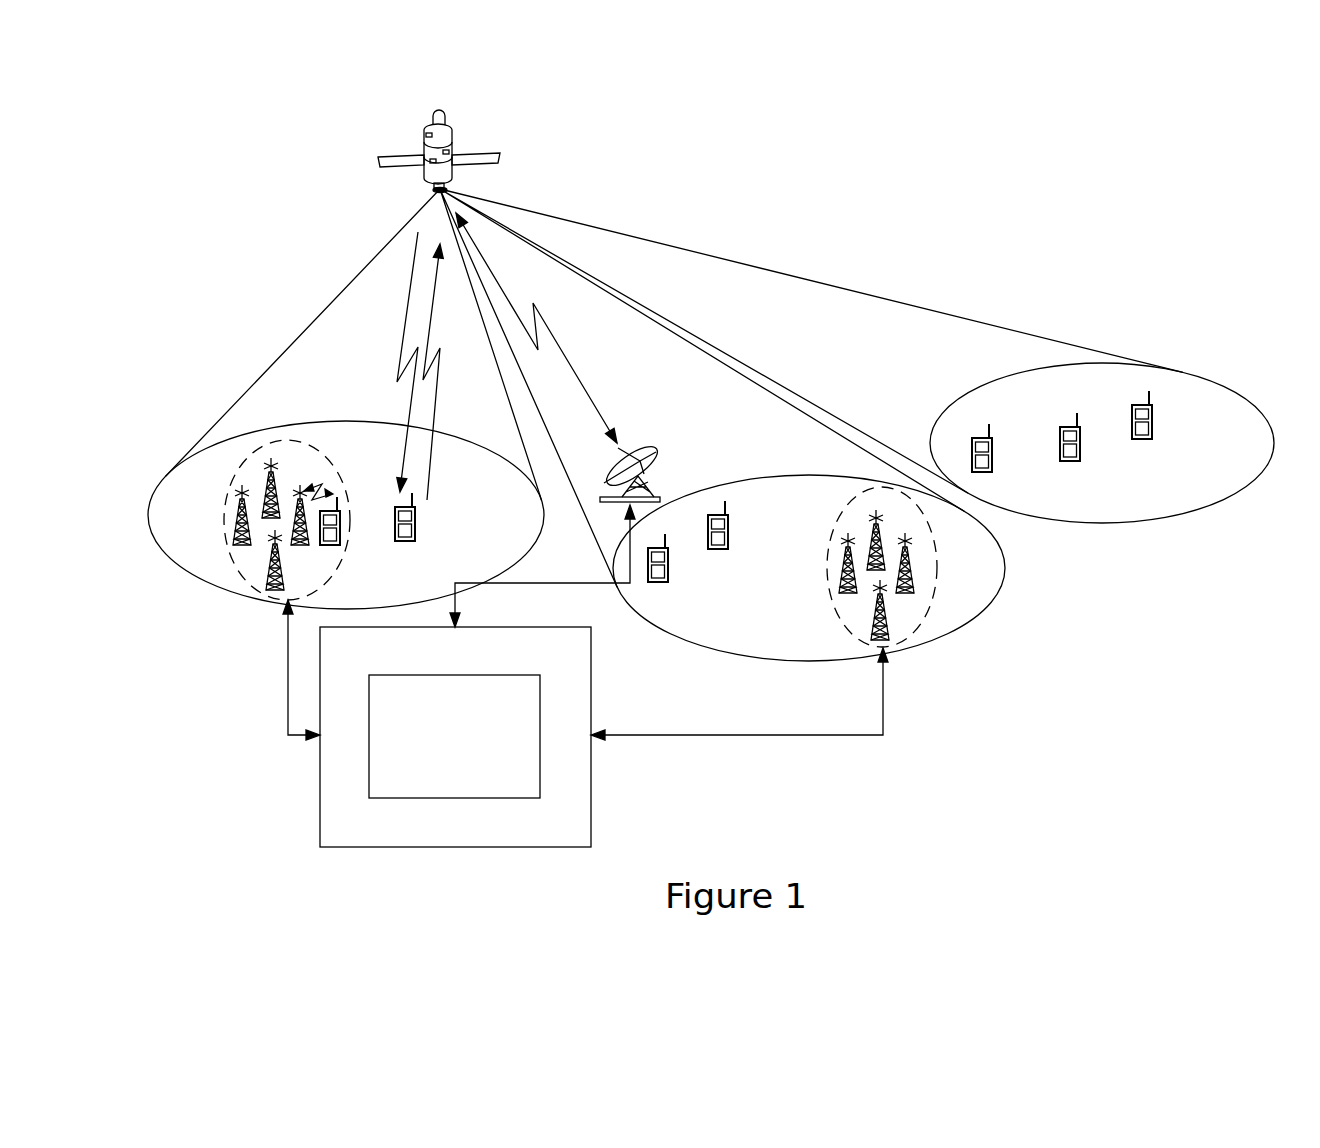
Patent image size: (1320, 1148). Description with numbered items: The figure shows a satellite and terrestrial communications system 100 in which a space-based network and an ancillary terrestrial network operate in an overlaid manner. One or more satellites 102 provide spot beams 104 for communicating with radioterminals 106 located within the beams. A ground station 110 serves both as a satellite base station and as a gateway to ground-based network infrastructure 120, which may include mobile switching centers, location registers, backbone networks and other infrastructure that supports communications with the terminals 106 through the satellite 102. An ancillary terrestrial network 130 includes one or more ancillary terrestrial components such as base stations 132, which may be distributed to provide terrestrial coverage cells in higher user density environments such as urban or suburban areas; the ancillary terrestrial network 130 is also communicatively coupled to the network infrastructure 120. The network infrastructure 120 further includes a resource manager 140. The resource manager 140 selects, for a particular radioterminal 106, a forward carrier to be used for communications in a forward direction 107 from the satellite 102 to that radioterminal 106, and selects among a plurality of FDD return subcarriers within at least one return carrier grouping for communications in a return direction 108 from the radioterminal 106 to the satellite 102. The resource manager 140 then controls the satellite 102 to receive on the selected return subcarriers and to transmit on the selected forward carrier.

The communications system 100 is at (684, 182).
The satellite 102 is at (474, 158).
The spot beam 104 is at (350, 423).
The radioterminal 106 is at (330, 547).
The forward direction 107 is at (397, 412).
The return direction 108 is at (436, 405).
The ground station 110 is at (662, 500).
The network infrastructure 120 is at (455, 847).
The ancillary terrestrial network 130 is at (238, 570).
The base station 132 is at (300, 488).
The resource manager 140 is at (455, 675).